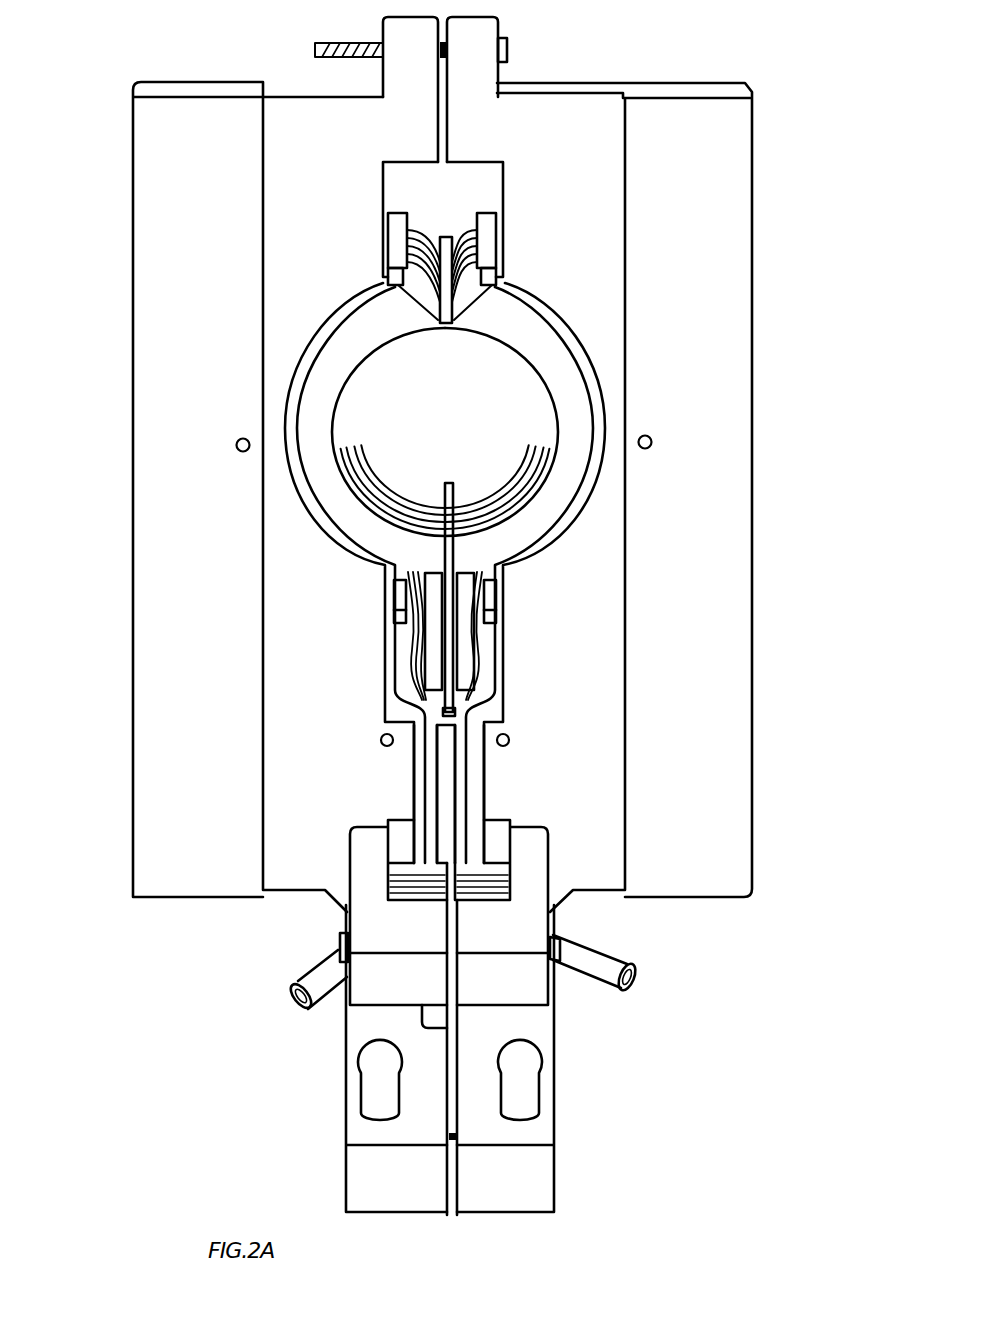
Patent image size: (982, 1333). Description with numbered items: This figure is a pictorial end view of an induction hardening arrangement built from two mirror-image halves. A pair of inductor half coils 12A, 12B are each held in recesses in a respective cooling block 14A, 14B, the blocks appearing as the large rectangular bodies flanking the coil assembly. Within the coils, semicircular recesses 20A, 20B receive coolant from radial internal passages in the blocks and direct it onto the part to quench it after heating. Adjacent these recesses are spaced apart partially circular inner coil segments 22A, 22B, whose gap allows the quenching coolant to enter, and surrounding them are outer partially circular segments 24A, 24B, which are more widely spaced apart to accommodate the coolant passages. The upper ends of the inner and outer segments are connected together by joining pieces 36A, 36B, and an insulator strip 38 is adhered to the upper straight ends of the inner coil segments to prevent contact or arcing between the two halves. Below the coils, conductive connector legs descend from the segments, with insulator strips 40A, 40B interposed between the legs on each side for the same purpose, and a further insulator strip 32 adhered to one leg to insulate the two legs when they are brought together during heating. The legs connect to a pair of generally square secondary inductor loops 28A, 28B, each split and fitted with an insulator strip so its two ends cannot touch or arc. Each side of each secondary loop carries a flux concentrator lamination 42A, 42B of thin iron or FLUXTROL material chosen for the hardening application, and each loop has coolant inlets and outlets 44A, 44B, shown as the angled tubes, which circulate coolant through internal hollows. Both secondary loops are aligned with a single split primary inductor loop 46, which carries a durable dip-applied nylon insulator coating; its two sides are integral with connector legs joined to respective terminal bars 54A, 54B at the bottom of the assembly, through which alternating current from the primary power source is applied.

The inductor half coil 12A is at (299, 487).
The inductor half coil 12B is at (581, 514).
The cooling block 14A is at (123, 878).
The cooling block 14B is at (757, 878).
The semicircular recess 20A is at (430, 510).
The semicircular recess 20B is at (467, 510).
The inner coil segment 22A is at (387, 503).
The inner coil segment 22B is at (497, 503).
The outer partially circular segment 24A is at (325, 517).
The outer partially circular segment 24B is at (533, 543).
The secondary inductor loop 28A is at (415, 792).
The secondary inductor loop 28B is at (477, 792).
The insulator strip 32 is at (448, 648).
The joining piece 36A is at (397, 230).
The joining piece 36B is at (488, 235).
The insulator strip 38 is at (451, 312).
The insulator strip 40A is at (415, 602).
The insulator strip 40B is at (490, 603).
The flux concentrator lamination 42A is at (388, 882).
The flux concentrator lamination 42B is at (510, 882).
The coolant inlets and outlets 44A is at (312, 976).
The coolant inlets and outlets 44B is at (602, 984).
The primary inductor loop 46 is at (449, 747).
The terminal bar 54A is at (346, 1167).
The terminal bar 54B is at (563, 1160).